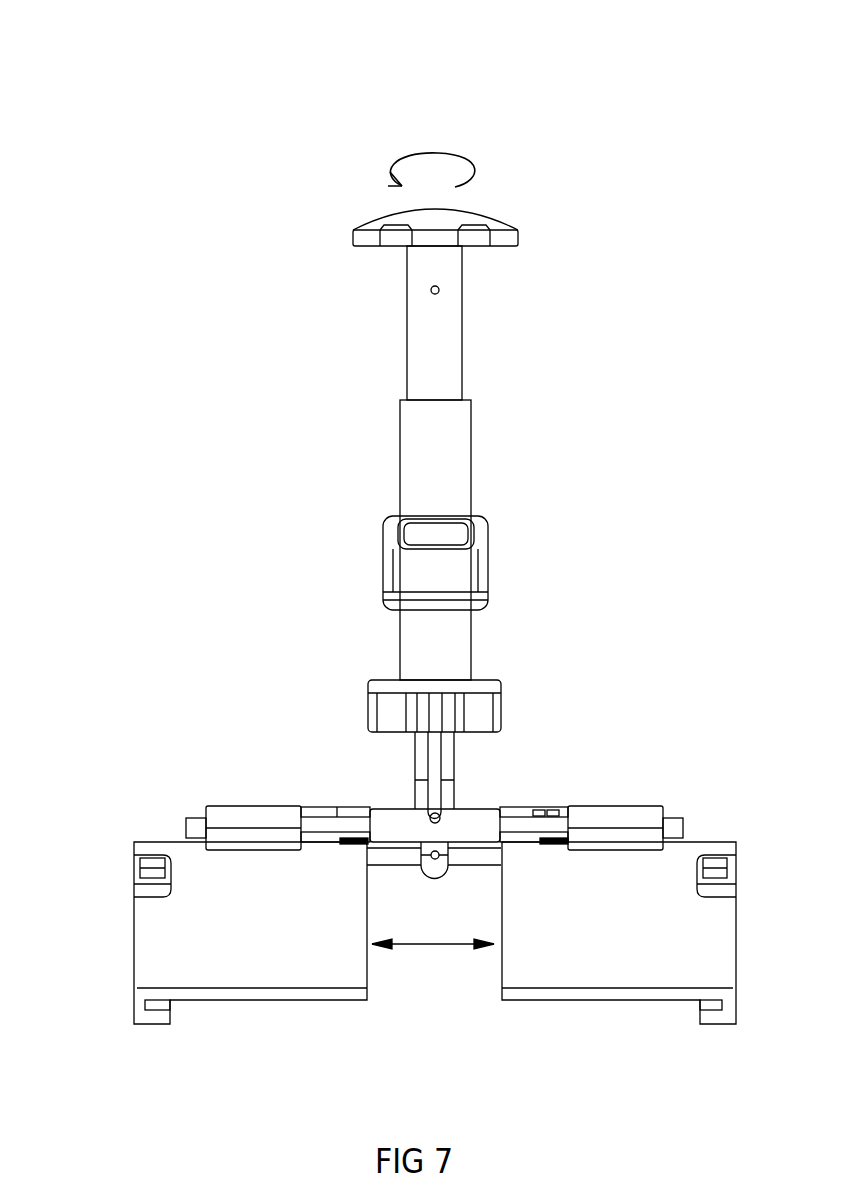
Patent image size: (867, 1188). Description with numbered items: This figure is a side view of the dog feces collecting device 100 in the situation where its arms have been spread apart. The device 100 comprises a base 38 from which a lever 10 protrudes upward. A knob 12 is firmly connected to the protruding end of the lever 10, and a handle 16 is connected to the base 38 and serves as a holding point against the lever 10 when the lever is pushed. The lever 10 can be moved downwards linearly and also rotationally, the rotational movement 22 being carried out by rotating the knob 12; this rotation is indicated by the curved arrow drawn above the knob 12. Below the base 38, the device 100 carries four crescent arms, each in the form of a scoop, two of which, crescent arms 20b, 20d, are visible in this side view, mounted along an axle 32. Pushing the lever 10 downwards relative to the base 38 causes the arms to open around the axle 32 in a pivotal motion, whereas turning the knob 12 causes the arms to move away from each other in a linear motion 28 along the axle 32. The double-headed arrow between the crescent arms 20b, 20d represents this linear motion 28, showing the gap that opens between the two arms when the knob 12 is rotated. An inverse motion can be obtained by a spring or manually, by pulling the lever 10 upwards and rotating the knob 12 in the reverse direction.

The dog feces collecting device 100 is at (102, 90).
The rotational movement 22 is at (460, 159).
The knob 12 is at (480, 221).
The lever 10 is at (443, 318).
The base 38 is at (447, 466).
The handle 16 is at (460, 573).
The axle 32 is at (682, 823).
The crescent arm 20b is at (288, 937).
The crescent arm 20d is at (587, 937).
The linear motion 28 is at (434, 948).